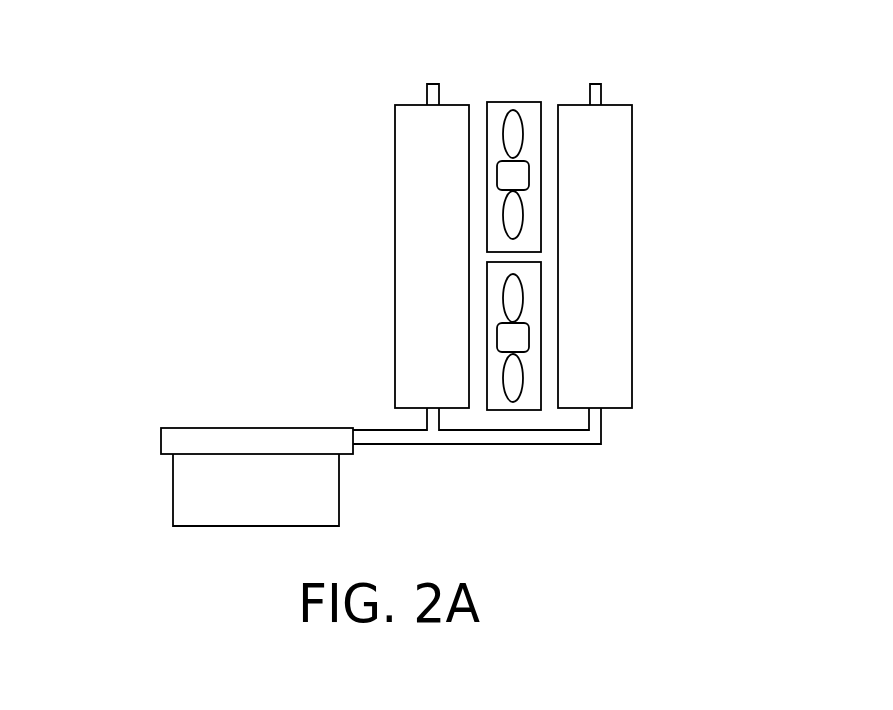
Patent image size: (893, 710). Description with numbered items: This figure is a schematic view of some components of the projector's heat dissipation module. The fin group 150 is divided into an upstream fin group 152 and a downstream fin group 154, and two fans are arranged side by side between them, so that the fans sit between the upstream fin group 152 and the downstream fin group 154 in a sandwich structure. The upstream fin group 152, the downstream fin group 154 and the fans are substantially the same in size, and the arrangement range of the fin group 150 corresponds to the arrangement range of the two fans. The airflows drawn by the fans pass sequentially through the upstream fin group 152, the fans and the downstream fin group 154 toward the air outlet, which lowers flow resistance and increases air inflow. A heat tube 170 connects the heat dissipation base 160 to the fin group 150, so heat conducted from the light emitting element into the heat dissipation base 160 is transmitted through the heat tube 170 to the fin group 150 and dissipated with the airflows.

The fin group 150 is at (653, 72).
The upstream fin group 152 is at (399, 159).
The downstream fin group 154 is at (627, 160).
The heat tube 170 is at (495, 445).
The heat dissipation base 160 is at (160, 492).